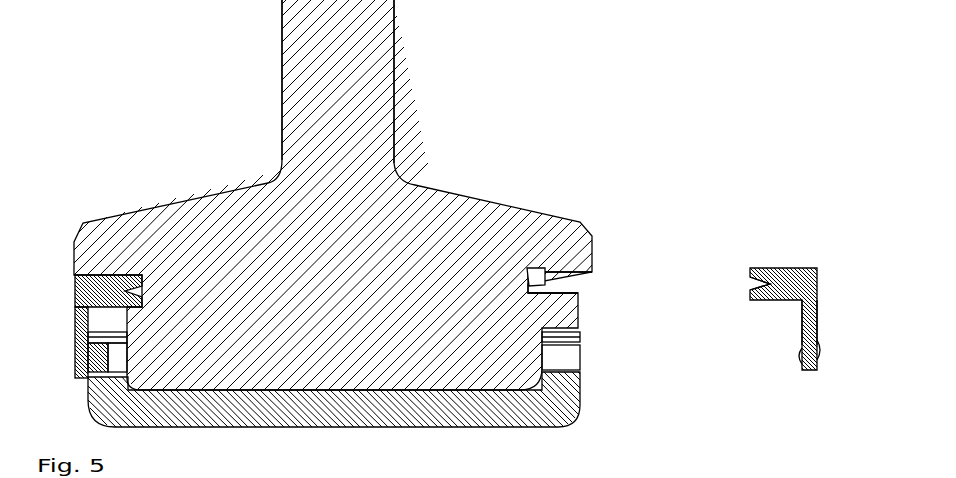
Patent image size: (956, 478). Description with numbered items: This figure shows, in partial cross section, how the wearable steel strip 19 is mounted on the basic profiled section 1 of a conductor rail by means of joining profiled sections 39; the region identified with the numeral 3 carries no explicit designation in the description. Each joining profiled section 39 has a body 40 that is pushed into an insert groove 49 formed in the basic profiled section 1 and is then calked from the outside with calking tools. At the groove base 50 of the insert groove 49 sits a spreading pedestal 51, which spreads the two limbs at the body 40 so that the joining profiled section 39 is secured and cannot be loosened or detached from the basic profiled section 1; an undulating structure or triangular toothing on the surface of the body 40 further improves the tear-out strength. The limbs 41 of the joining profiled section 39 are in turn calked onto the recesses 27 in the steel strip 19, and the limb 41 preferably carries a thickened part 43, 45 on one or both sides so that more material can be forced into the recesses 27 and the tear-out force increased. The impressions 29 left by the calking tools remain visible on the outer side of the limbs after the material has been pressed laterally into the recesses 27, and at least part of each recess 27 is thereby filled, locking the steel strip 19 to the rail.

The basic profiled section 1 is at (347, 92).
The valve body / disc 3 is at (228, 250).
The steel strip 19 is at (308, 426).
The recesses 27 is at (572, 357).
The impressions 29 is at (78, 356).
The joining profiled section 39 is at (95, 292).
The body 40 is at (786, 268).
The limbs 41 is at (805, 318).
The thickened part 43 is at (820, 352).
The thickened part 45 is at (800, 352).
The insert groove 49 is at (572, 288).
The groove base 50 is at (537, 278).
The spreading pedestal 51 is at (545, 278).